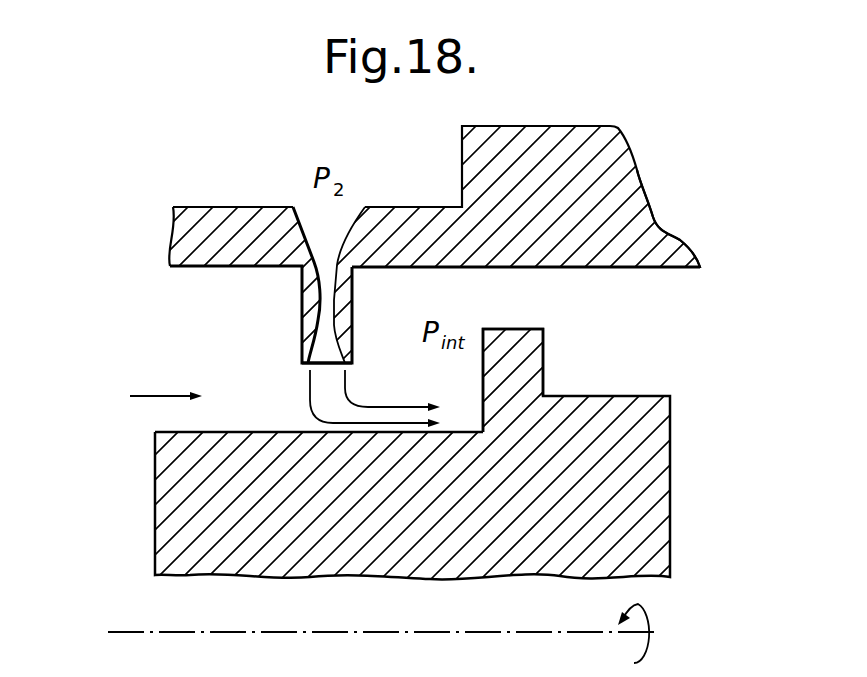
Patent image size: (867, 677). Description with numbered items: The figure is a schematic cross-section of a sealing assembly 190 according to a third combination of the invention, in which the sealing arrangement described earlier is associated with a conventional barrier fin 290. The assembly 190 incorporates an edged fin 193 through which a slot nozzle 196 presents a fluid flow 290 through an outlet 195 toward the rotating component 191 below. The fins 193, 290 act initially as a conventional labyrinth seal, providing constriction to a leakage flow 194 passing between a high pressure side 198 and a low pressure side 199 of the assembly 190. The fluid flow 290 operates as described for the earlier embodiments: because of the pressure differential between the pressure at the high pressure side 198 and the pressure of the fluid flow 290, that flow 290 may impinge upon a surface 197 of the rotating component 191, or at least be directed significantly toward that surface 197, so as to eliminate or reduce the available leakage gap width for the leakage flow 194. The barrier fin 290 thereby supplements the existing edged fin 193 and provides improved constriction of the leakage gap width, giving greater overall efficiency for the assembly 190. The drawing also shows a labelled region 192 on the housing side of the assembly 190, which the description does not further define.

The sealing assembly 190 is at (672, 168).
The rotating component 191 is at (195, 533).
The outer surface of seal member 192 is at (645, 245).
The edged fin 193 is at (308, 301).
The leakage flow 194 is at (152, 398).
The outlet 195 is at (326, 362).
The slot nozzle 196 is at (323, 218).
The surface of the rotating component 197 is at (268, 432).
The high pressure side 198 is at (187, 310).
The low pressure side 199 is at (705, 314).
The barrier fin 290 is at (523, 357).